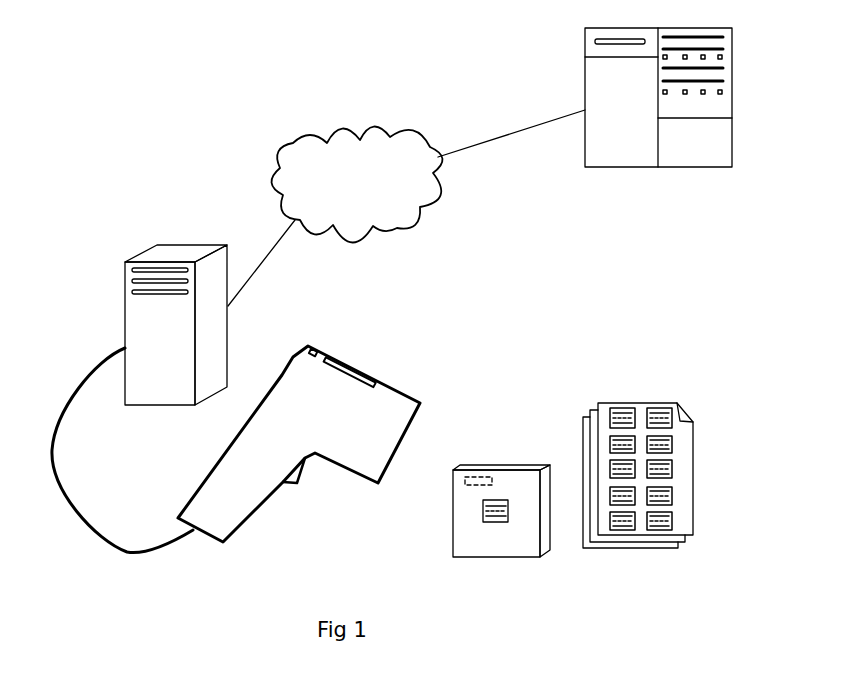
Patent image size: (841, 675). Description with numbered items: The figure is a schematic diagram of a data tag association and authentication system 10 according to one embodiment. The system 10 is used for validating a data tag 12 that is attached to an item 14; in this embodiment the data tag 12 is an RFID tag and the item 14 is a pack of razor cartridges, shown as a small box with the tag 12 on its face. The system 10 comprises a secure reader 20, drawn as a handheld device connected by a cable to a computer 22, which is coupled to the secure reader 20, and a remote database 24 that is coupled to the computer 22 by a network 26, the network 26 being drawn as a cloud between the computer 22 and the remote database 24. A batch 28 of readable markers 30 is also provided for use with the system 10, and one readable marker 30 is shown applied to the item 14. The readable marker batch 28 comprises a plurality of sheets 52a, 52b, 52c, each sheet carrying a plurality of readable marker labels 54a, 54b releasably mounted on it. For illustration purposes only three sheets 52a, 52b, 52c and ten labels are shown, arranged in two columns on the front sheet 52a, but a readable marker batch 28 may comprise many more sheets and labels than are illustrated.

The data tag association and authentication system 10 is at (112, 78).
The data tag 12 is at (463, 477).
The item 14 is at (510, 465).
The secure reader 20 is at (402, 392).
The computer 22 is at (227, 328).
The remote database 24 is at (625, 167).
The network 26 is at (397, 230).
The batch of readable markers 28 is at (590, 565).
The readable marker 30 is at (502, 523).
The sheet 52a is at (695, 512).
The sheet 52b is at (687, 542).
The sheet 52c is at (657, 550).
The readable marker label 54a is at (623, 405).
The readable marker label 54b is at (657, 405).